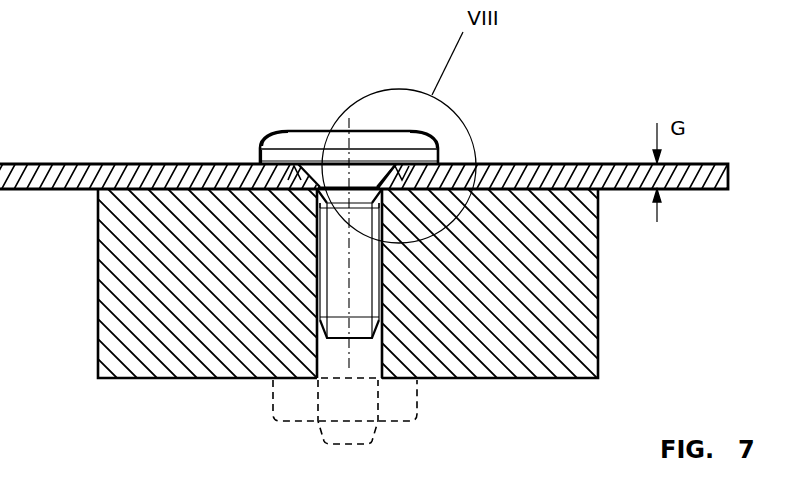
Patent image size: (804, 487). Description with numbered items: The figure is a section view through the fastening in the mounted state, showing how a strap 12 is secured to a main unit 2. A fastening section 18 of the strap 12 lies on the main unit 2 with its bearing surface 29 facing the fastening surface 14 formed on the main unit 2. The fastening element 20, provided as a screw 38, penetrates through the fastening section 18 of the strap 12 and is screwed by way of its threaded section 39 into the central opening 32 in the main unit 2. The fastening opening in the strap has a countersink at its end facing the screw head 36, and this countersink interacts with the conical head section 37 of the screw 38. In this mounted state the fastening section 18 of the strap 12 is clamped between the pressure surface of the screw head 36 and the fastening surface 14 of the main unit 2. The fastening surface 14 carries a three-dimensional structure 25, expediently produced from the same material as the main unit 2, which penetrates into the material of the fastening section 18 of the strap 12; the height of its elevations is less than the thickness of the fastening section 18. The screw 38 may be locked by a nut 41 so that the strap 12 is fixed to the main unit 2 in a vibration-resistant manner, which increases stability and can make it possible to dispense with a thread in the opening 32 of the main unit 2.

The main unit 2 is at (110, 289).
The strap 12 is at (721, 163).
The fastening surface 14 is at (431, 178).
The fastening section 18 is at (413, 194).
The fastening element 20 is at (321, 140).
The structure 25 is at (261, 150).
The bearing surface 29 is at (406, 190).
The central opening 32 is at (333, 356).
The screw head 36 is at (283, 138).
The conical head section 37 is at (418, 128).
The screw 38 is at (288, 117).
The threaded section 39 is at (338, 263).
The nut 41 is at (413, 412).